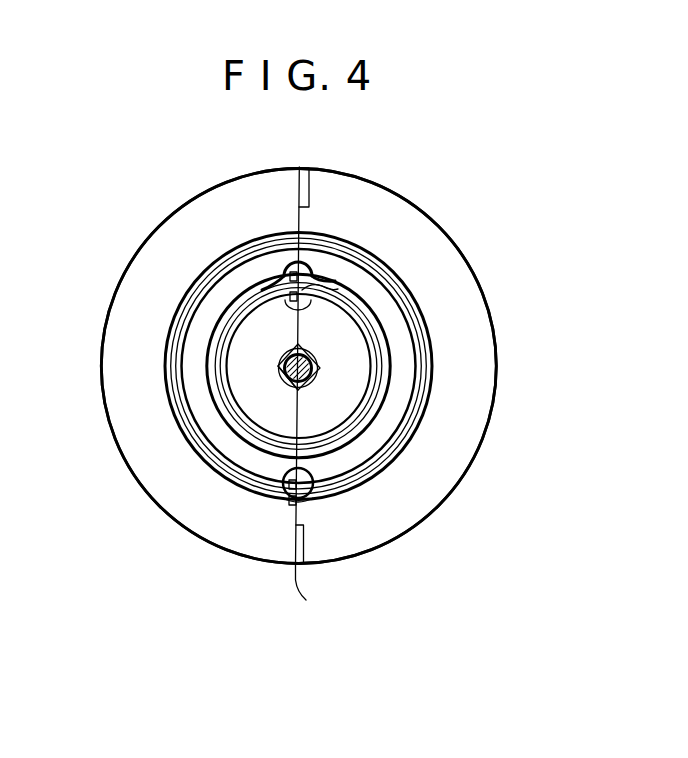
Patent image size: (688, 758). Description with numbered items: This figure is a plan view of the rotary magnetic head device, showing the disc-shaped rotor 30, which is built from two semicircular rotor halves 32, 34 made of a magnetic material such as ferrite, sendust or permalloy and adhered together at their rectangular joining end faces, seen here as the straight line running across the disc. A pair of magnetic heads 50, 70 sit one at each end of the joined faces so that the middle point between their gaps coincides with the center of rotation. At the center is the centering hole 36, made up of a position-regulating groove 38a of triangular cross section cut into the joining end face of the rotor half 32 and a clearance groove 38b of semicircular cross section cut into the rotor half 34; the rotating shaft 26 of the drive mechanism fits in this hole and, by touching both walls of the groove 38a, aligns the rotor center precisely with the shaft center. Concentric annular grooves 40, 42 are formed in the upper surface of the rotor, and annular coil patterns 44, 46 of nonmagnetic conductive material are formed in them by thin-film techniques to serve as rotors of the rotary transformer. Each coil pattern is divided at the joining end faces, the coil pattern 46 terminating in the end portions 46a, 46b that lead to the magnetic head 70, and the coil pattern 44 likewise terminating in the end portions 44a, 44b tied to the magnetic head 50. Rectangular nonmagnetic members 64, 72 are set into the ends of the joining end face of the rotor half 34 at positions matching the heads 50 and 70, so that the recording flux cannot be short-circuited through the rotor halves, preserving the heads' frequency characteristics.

The rotating shaft 26 is at (301, 347).
The disc-shaped rotor 30 is at (490, 313).
The rotor half 32 is at (145, 252).
The rotor half 34 is at (437, 243).
The centering hole 36 is at (303, 390).
The position-regulating groove 38a is at (286, 385).
The clearance groove 38b is at (327, 372).
The annular groove 40 is at (430, 378).
The annular groove 42 is at (210, 398).
The coil pattern 44 is at (405, 432).
The end portion of coil pattern 44a is at (297, 502).
The end portion of coil pattern 44b is at (283, 492).
The coil pattern 46 is at (232, 437).
The end portion of coil pattern 46a is at (285, 263).
The end portion of coil pattern 46b is at (293, 301).
The magnetic head 50 is at (300, 496).
The nonmagnetic member 64 is at (306, 539).
The magnetic head 70 is at (299, 167).
The nonmagnetic member 72 is at (303, 188).